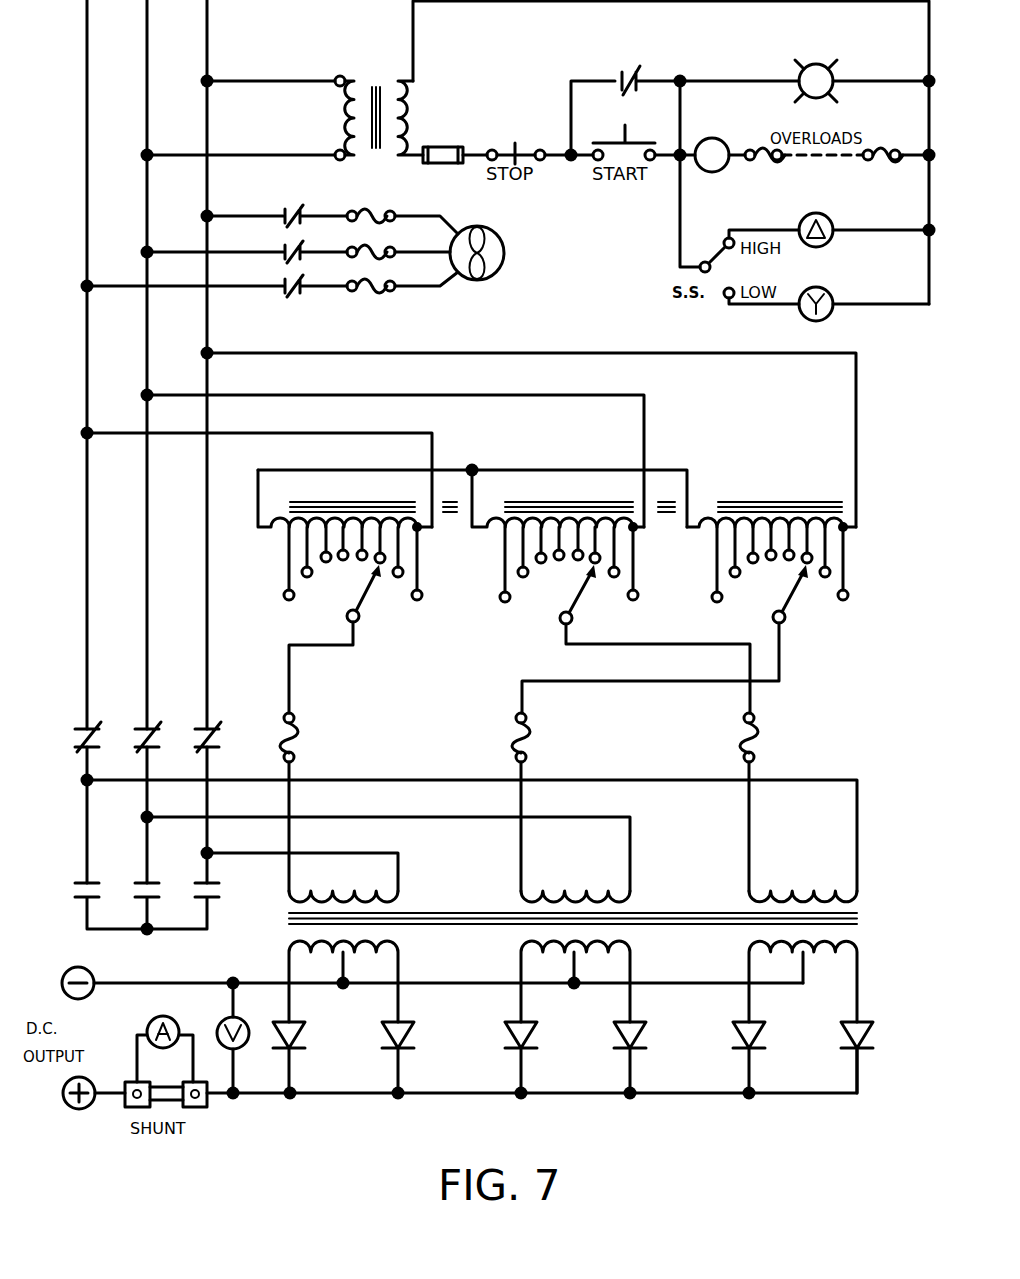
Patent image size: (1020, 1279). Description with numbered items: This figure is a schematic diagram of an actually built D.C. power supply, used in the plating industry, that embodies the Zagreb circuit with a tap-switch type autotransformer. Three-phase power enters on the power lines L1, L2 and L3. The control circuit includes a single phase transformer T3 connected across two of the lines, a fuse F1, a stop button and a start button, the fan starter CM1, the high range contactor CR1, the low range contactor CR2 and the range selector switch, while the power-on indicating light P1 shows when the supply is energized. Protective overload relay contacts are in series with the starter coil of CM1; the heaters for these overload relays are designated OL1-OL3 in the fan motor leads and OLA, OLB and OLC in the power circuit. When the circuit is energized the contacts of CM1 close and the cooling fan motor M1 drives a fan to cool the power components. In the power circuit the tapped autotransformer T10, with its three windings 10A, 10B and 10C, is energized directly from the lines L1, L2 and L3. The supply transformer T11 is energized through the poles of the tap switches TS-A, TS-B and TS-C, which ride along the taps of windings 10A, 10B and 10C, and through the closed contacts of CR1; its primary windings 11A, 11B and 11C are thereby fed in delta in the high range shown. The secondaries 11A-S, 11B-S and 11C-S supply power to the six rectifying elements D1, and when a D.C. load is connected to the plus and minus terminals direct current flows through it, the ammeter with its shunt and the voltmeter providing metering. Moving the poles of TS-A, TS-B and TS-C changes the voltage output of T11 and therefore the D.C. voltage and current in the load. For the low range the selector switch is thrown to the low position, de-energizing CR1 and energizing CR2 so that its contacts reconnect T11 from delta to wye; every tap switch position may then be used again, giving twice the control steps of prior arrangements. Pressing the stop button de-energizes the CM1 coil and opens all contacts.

The power line L1 is at (100, 441).
The power line L2 is at (160, 441).
The power line L3 is at (220, 441).
The single phase transformer T3 is at (285, 107).
The fuse F1 is at (443, 142).
The fan starter CM1 is at (416, 170).
The overload relay heaters OL1-OL3 is at (356, 263).
The cooling fan motor M1 is at (464, 251).
The power-on indicating light P1 is at (804, 77).
The high range contactor CR1 is at (479, 475).
The low range contactor CR2 is at (479, 608).
The tapped autotransformer T10 is at (574, 536).
The autotransformer winding 10A is at (280, 531).
The autotransformer winding 10B is at (496, 531).
The autotransformer winding 10C is at (710, 531).
The tap switch TS-A is at (347, 574).
The tap switch TS-B is at (560, 574).
The tap switch TS-C is at (772, 574).
The overload relay heater OLA is at (306, 802).
The overload relay heater OLB is at (766, 802).
The overload relay heater OLC is at (538, 802).
The supply transformer T11 is at (605, 944).
The supply transformer primary winding 11A is at (370, 896).
The supply transformer primary winding 11B is at (832, 896).
The supply transformer primary winding 11C is at (602, 896).
The secondary 11A-S is at (400, 963).
The secondary 11B-S is at (859, 963).
The secondary 11C-S is at (632, 963).
The rectifying elements D1 is at (613, 1035).